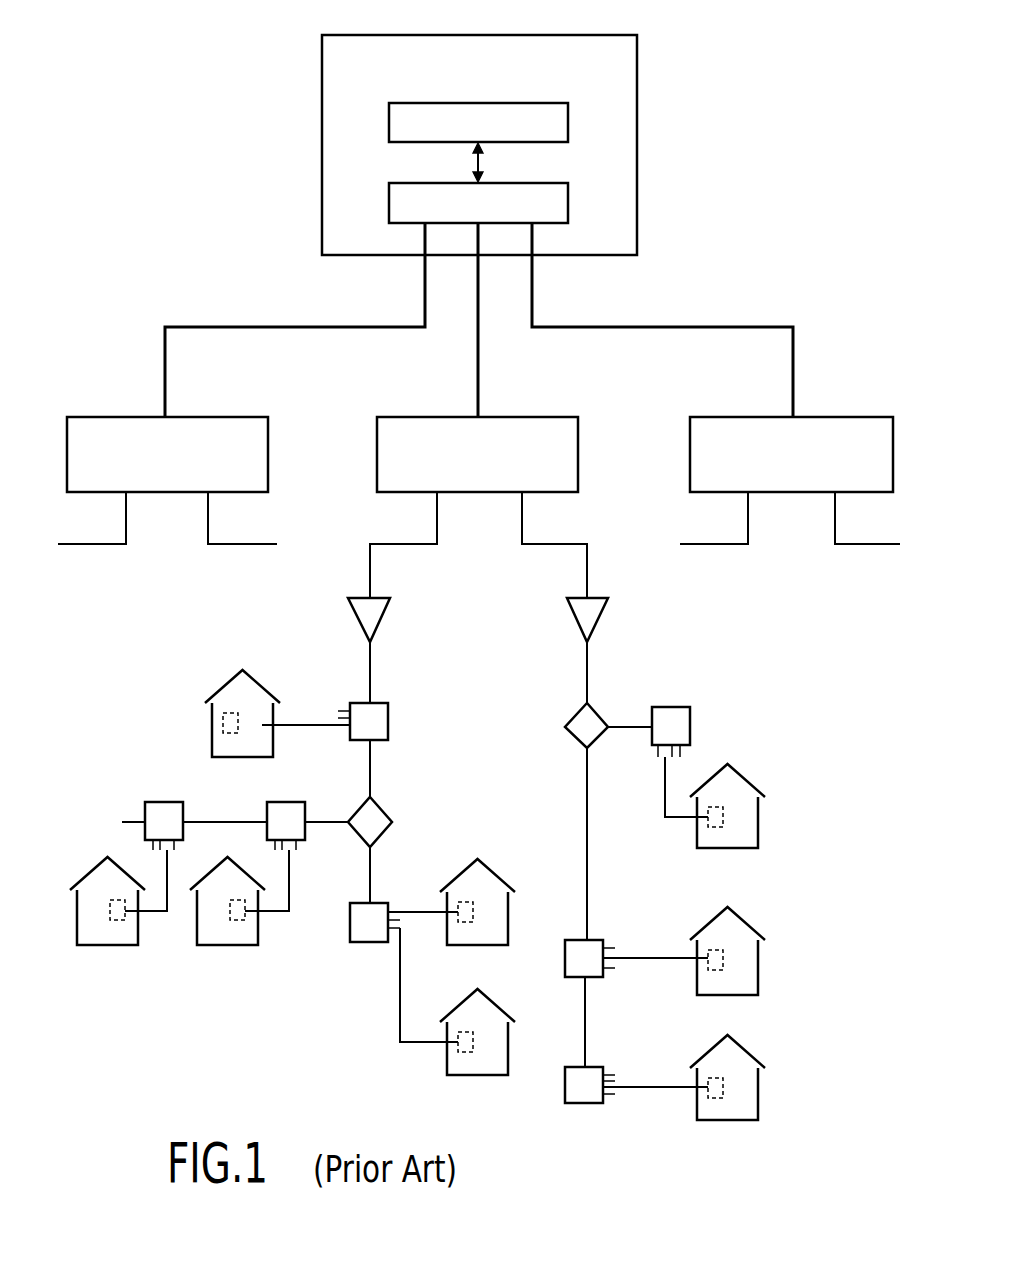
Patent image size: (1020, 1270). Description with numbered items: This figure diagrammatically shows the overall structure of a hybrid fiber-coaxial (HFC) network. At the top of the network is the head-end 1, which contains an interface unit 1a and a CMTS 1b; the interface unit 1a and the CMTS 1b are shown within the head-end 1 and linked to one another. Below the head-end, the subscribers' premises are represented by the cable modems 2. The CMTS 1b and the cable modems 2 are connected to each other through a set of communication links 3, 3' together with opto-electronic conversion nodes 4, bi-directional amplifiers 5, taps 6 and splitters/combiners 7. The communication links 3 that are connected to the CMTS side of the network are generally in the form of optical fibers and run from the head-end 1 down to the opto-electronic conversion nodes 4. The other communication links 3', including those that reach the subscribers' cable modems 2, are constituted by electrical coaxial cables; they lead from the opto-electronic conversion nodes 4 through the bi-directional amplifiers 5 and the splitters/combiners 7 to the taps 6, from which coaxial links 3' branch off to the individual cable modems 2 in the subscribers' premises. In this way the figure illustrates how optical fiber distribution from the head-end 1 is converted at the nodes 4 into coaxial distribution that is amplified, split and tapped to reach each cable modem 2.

The head-end 1 is at (637, 68).
The interface unit 1a is at (568, 118).
The CMTS 1b is at (550, 208).
The cable modems 2 is at (255, 733).
The communication links 3 is at (479, 320).
The communication links 3' is at (481, 813).
The opto-electronic conversion nodes 4 is at (243, 427).
The bi-directional amplifiers 5 is at (376, 612).
The taps 6 is at (380, 717).
The splitters/combiners 7 is at (392, 822).